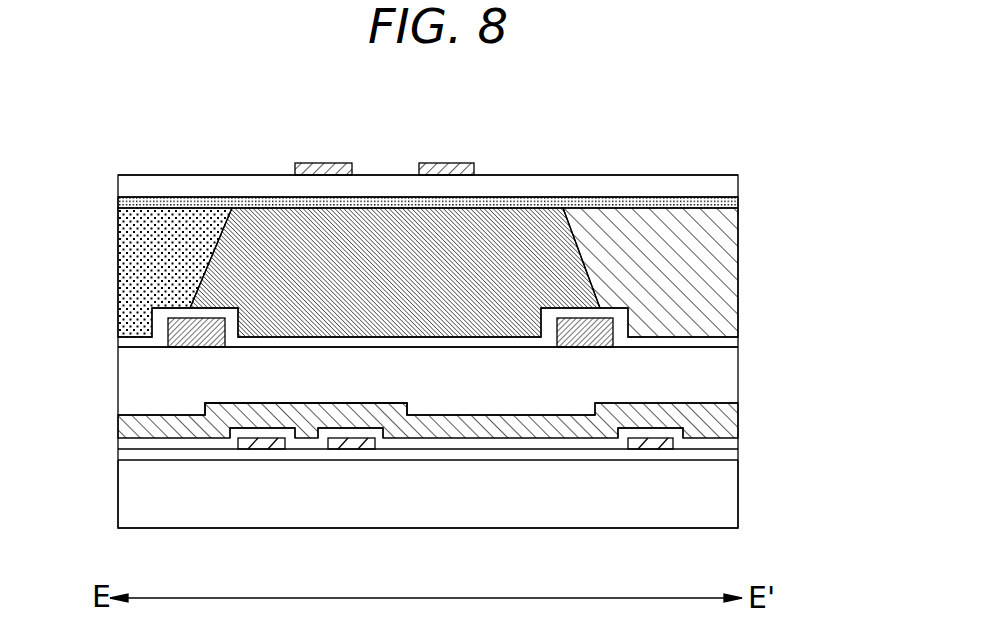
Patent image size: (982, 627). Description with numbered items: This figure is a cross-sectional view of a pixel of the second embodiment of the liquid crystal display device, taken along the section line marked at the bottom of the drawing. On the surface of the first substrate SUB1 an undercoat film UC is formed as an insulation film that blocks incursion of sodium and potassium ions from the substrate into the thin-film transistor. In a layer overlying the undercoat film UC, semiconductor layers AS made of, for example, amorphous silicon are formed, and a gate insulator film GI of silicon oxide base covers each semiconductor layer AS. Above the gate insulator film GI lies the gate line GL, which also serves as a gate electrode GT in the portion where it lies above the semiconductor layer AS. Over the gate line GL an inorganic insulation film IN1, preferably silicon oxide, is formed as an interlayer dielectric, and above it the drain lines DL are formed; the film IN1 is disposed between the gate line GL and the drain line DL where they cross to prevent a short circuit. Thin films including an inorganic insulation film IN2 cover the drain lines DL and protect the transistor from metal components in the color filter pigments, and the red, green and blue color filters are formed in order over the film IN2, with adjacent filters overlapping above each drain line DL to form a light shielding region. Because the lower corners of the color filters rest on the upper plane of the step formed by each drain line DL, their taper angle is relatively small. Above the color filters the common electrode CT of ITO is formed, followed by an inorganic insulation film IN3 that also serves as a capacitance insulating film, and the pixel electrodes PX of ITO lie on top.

The pixel electrode PX is at (327, 167).
The common electrode CT is at (125, 200).
The drain line DL is at (175, 332).
The gate electrode GT is at (305, 401).
The gate insulator film GI is at (128, 443).
The semiconductor layer AS is at (257, 444).
The inorganic insulation film IN3 is at (727, 193).
The inorganic insulation film IN2 is at (728, 343).
The inorganic insulation film IN1 is at (727, 377).
The gate line GL is at (727, 423).
The undercoat film UC is at (727, 455).
The first substrate SUB1 is at (727, 505).